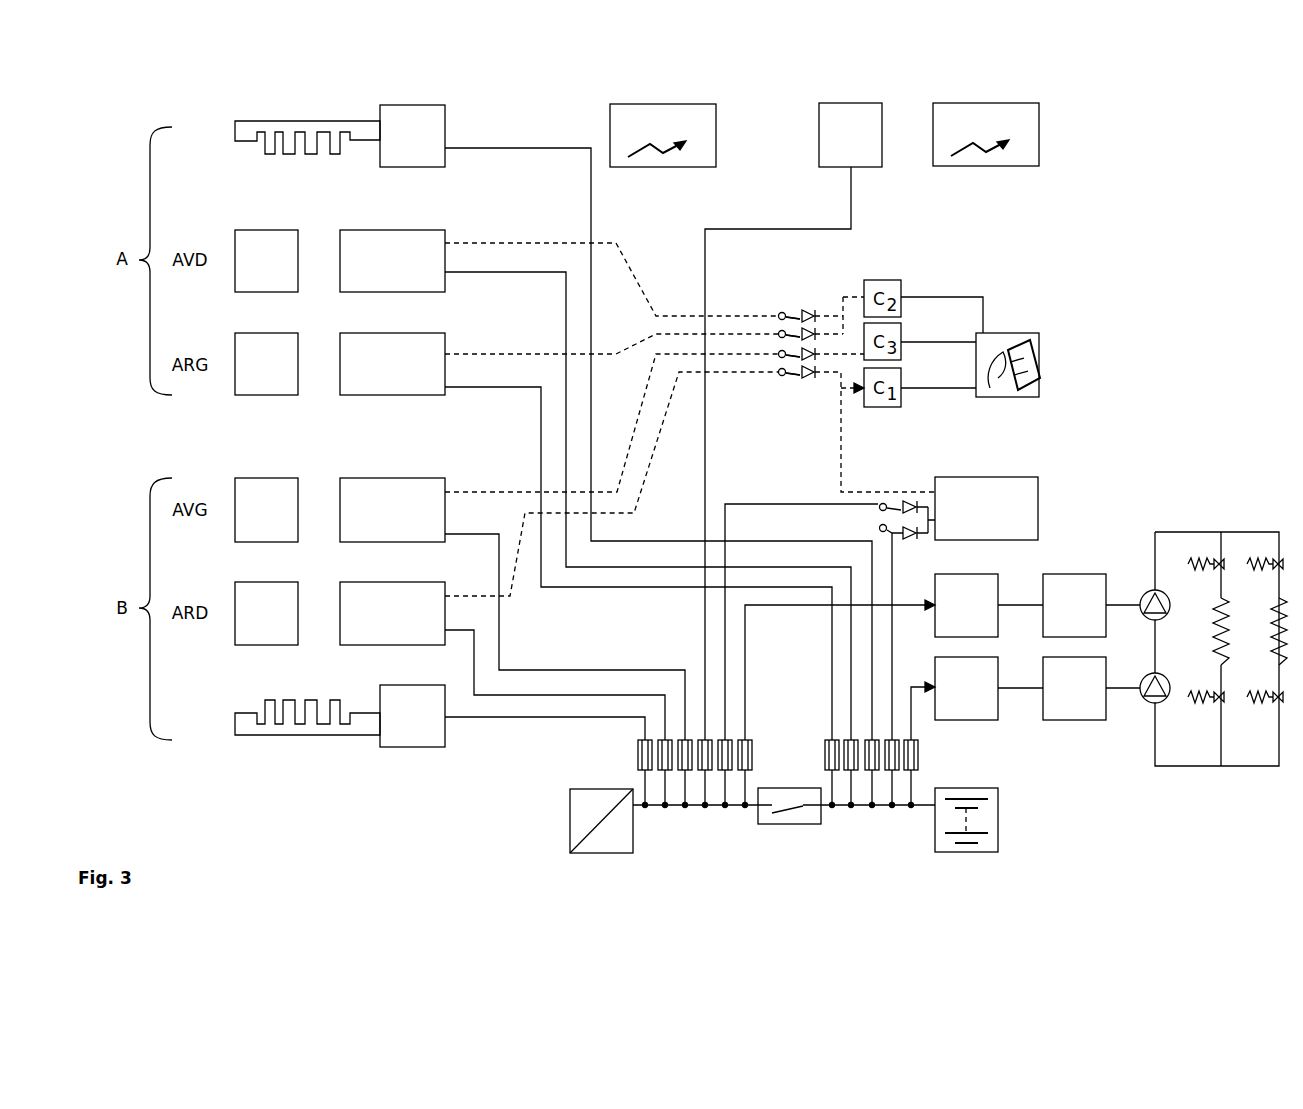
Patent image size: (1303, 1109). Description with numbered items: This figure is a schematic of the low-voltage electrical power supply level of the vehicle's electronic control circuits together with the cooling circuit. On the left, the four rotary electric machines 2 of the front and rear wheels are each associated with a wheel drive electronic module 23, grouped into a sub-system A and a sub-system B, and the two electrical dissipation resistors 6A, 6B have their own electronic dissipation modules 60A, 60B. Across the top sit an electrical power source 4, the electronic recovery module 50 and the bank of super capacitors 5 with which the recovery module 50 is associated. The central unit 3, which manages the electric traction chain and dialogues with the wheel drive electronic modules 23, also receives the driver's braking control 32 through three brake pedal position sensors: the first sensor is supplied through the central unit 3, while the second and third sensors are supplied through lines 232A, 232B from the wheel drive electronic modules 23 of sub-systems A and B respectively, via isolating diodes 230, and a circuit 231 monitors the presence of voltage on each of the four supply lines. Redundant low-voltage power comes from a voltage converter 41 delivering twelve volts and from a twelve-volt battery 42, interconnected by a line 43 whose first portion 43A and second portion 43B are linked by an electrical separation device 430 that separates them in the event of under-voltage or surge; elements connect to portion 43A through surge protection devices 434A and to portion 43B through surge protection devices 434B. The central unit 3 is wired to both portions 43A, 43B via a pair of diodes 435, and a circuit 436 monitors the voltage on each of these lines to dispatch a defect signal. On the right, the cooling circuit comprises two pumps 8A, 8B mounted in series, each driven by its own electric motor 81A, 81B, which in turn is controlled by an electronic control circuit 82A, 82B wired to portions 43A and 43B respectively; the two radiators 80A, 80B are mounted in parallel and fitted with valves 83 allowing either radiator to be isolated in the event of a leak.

The rotary electric machine 2 is at (263, 230).
The wheel drive electronic module 23 is at (388, 230).
The electrical dissipation resistor 6A is at (320, 121).
The electrical dissipation resistor 6B is at (320, 735).
The electronic dissipation module 60A is at (412, 105).
The electronic dissipation module 60B is at (412, 747).
The energy source 4 is at (663, 104).
The bank of super capacitors 5 is at (987, 103).
The electronic recovery module 50 is at (851, 103).
The central unit 3 is at (1023, 490).
The braking control 32 is at (1007, 333).
The diodes 230 is at (807, 308).
The monitoring circuit 231 is at (778, 374).
The line 232A is at (853, 293).
The line 232B is at (857, 358).
The diode 435 is at (905, 498).
The monitoring circuit 436 is at (880, 503).
The pump 8A is at (1143, 703).
The pump 8B is at (1143, 588).
The radiator 80A is at (1212, 652).
The radiator 80B is at (1270, 642).
The electric motor 81A is at (1060, 713).
The electric motor 81B is at (1060, 578).
The electronic control circuit 82A is at (953, 713).
The electronic control circuit 82B is at (953, 578).
The valves 83 is at (1253, 553).
The voltage converter 41 is at (570, 834).
The battery 42 is at (998, 833).
The line 43 is at (727, 858).
The first portion 43A is at (880, 810).
The second portion 43B is at (670, 810).
The electrical separation device 430 is at (788, 825).
The surge protection device 434A is at (920, 760).
The surge protection device 434B is at (753, 752).